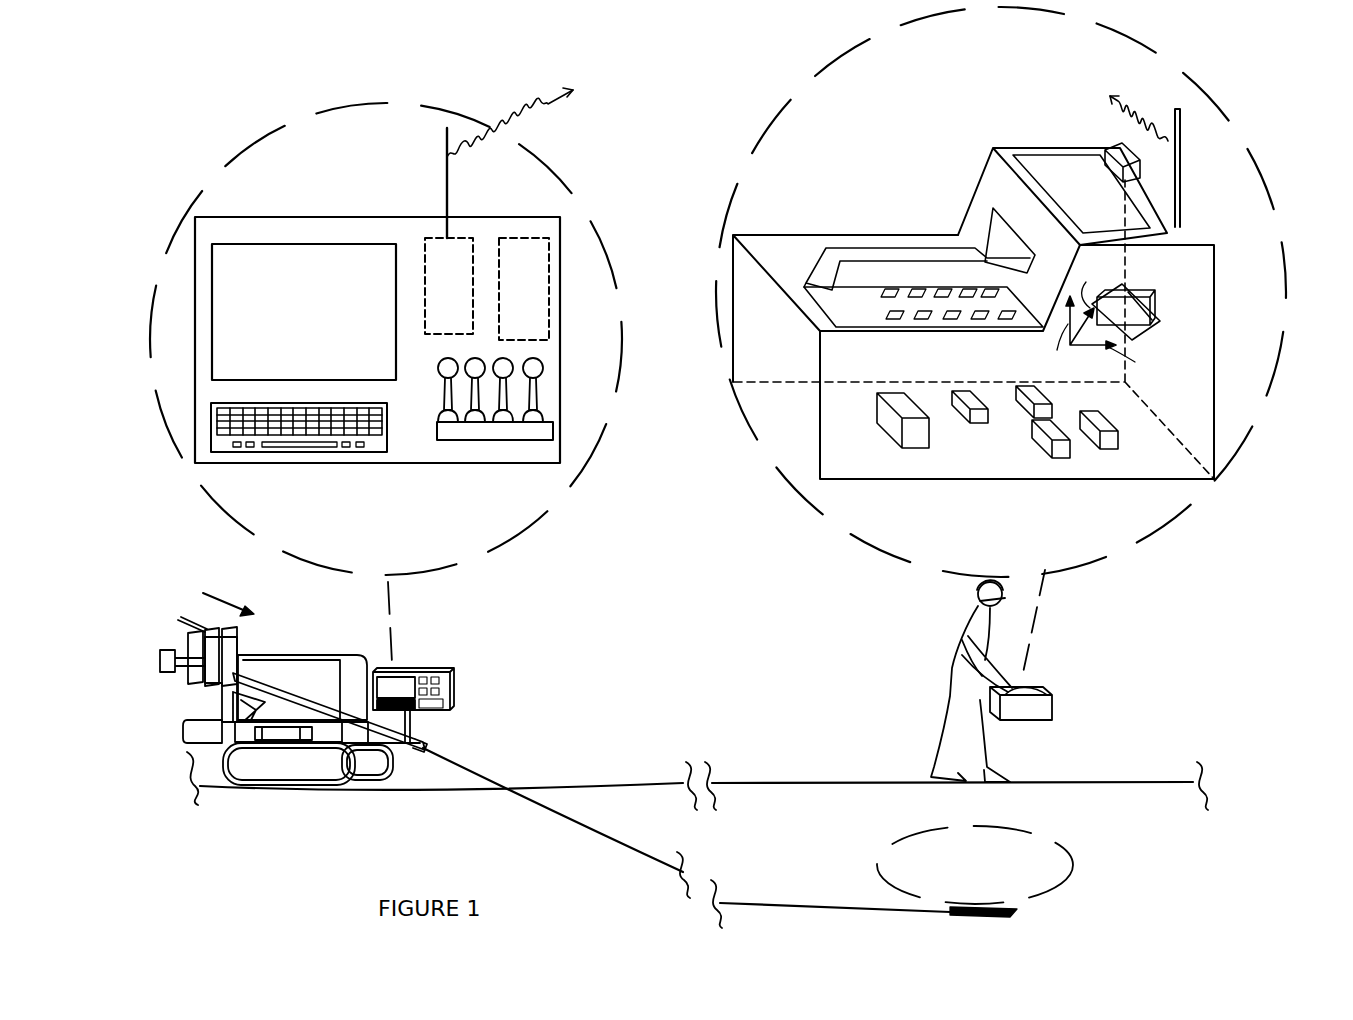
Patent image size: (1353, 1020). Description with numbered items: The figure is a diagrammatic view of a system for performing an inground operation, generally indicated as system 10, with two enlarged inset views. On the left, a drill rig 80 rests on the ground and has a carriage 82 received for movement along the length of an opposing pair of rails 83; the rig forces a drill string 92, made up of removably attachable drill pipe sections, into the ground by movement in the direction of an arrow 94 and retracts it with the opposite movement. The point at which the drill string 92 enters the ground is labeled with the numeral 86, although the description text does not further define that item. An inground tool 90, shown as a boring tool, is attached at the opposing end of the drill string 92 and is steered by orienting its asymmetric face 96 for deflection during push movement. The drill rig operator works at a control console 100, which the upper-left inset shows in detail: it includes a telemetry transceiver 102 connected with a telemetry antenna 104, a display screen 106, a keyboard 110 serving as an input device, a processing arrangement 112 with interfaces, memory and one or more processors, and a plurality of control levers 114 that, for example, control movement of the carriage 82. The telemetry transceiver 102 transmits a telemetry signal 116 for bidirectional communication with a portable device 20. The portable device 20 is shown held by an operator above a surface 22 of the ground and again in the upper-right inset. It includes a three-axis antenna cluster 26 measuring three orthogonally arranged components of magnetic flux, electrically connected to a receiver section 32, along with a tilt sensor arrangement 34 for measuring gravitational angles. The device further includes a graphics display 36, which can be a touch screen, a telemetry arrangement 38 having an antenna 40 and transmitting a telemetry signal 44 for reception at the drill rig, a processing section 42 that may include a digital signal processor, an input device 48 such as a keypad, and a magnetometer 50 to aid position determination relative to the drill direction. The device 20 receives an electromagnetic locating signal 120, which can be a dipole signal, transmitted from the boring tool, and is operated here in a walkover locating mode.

The system for performing an inground operation 10 is at (670, 46).
The portable device 20 is at (1059, 140).
The surface 22 is at (810, 782).
The three-axis antenna cluster 26 is at (1160, 341).
The receiver section 32 is at (973, 422).
The tilt sensor arrangement 34 is at (1053, 458).
The graphics display 36 is at (1046, 146).
The telemetry arrangement 38 is at (1101, 450).
The antenna 40 is at (1181, 185).
The processing section 42 is at (903, 449).
The telemetry signal 44 is at (1128, 108).
The input device 48 is at (810, 288).
The magnetometer 50 is at (1025, 407).
The drill rig 80 is at (261, 795).
The carriage 82 is at (251, 636).
The rails 83 is at (413, 775).
The bore entry point 86 is at (470, 779).
The inground tool 90 is at (968, 907).
The drill string 92 is at (542, 813).
The arrow 94 is at (227, 600).
The asymmetric face 96 is at (1017, 915).
The control console 100 is at (537, 516).
The telemetry transceiver 102 is at (424, 254).
The telemetry antenna 104 is at (455, 197).
The display screen 106 is at (244, 245).
The keyboard 110 is at (292, 452).
The processing arrangement 112 is at (549, 300).
The control levers 114 is at (492, 440).
The telemetry signal 116 is at (502, 108).
The electromagnetic locating signal 120 is at (1055, 848).